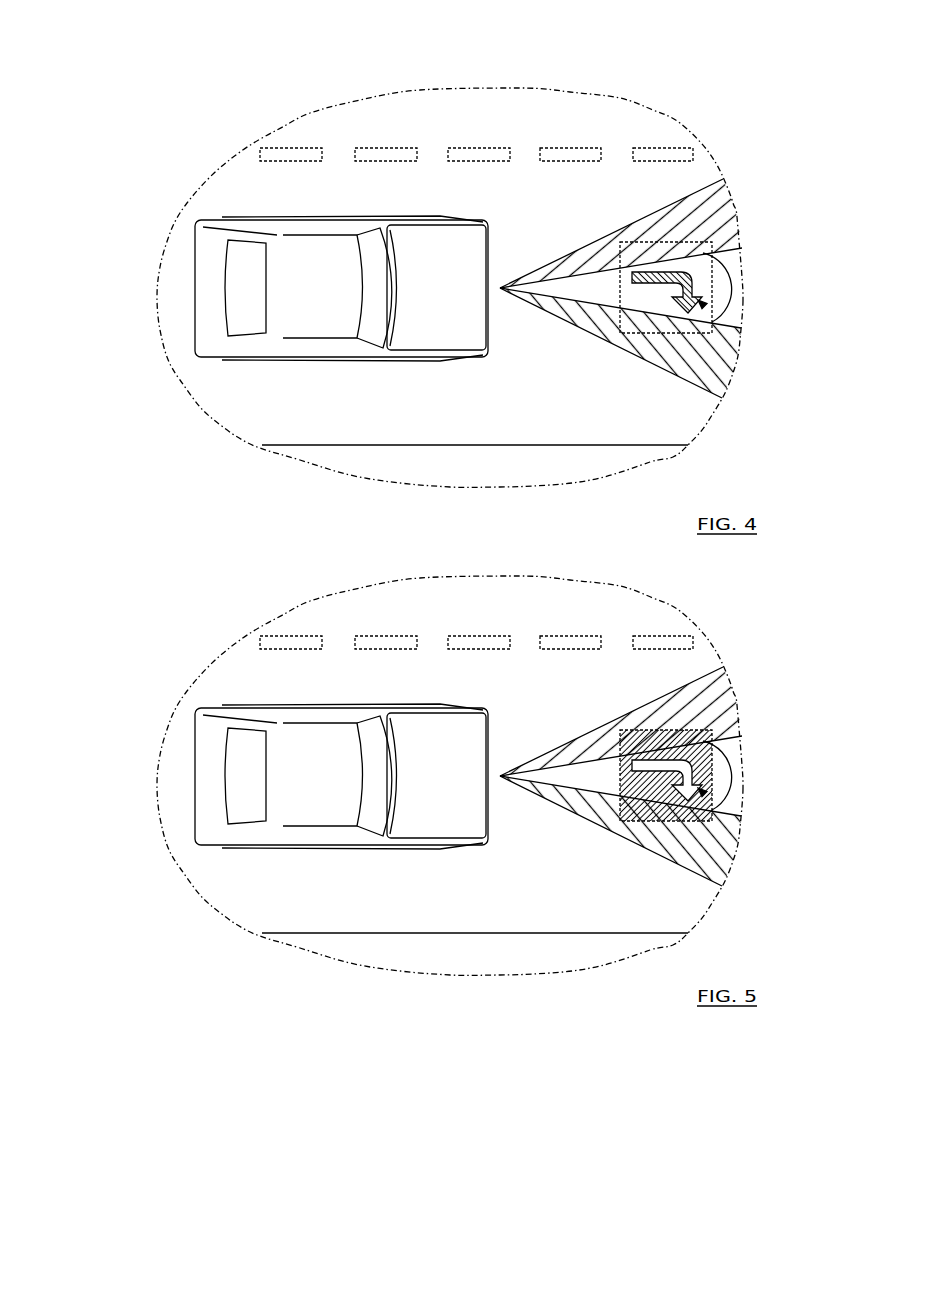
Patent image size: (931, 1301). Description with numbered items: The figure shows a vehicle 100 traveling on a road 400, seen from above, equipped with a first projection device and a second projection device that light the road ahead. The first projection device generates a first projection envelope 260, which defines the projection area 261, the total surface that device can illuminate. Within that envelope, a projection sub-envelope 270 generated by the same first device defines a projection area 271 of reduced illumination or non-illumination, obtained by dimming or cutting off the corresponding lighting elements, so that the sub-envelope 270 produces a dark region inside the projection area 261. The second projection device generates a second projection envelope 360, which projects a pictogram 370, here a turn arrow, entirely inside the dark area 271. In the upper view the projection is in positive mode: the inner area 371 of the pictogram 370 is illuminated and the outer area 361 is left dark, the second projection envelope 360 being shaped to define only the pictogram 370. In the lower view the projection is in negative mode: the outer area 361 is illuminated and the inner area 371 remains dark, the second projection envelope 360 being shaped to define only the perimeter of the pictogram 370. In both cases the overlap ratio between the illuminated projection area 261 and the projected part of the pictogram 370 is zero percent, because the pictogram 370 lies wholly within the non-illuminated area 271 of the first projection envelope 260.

In FIG. 4, the vehicle 100 is at (300, 302).
In FIG. 5, the vehicle 100 is at (266, 776).
In FIG. 4, the road 400 is at (545, 205).
In FIG. 5, the road 400 is at (450, 742).
In FIG. 4, the projection area of non-illumination 271 is at (590, 283).
In FIG. 5, the projection area of non-illumination 271 is at (637, 694).
In FIG. 4, the projection area 261 is at (720, 222).
In FIG. 5, the projection area 261 is at (655, 718).
In FIG. 4, the outer area of the pictogram 361 is at (708, 255).
In FIG. 5, the outer area of the pictogram 361 is at (718, 768).
In FIG. 4, the inner area of the pictogram 371 is at (697, 277).
In FIG. 5, the inner area of the pictogram 371 is at (722, 773).
In FIG. 4, the pictogram 370 is at (708, 312).
In FIG. 5, the pictogram 370 is at (755, 777).
In FIG. 4, the second projection envelope 360 is at (683, 340).
In FIG. 5, the second projection envelope 360 is at (664, 831).
In FIG. 4, the first projection envelope 260 is at (641, 360).
In FIG. 5, the first projection envelope 260 is at (653, 863).
In FIG. 4, the projection sub-envelope 270 is at (563, 303).
In FIG. 5, the projection sub-envelope 270 is at (620, 874).